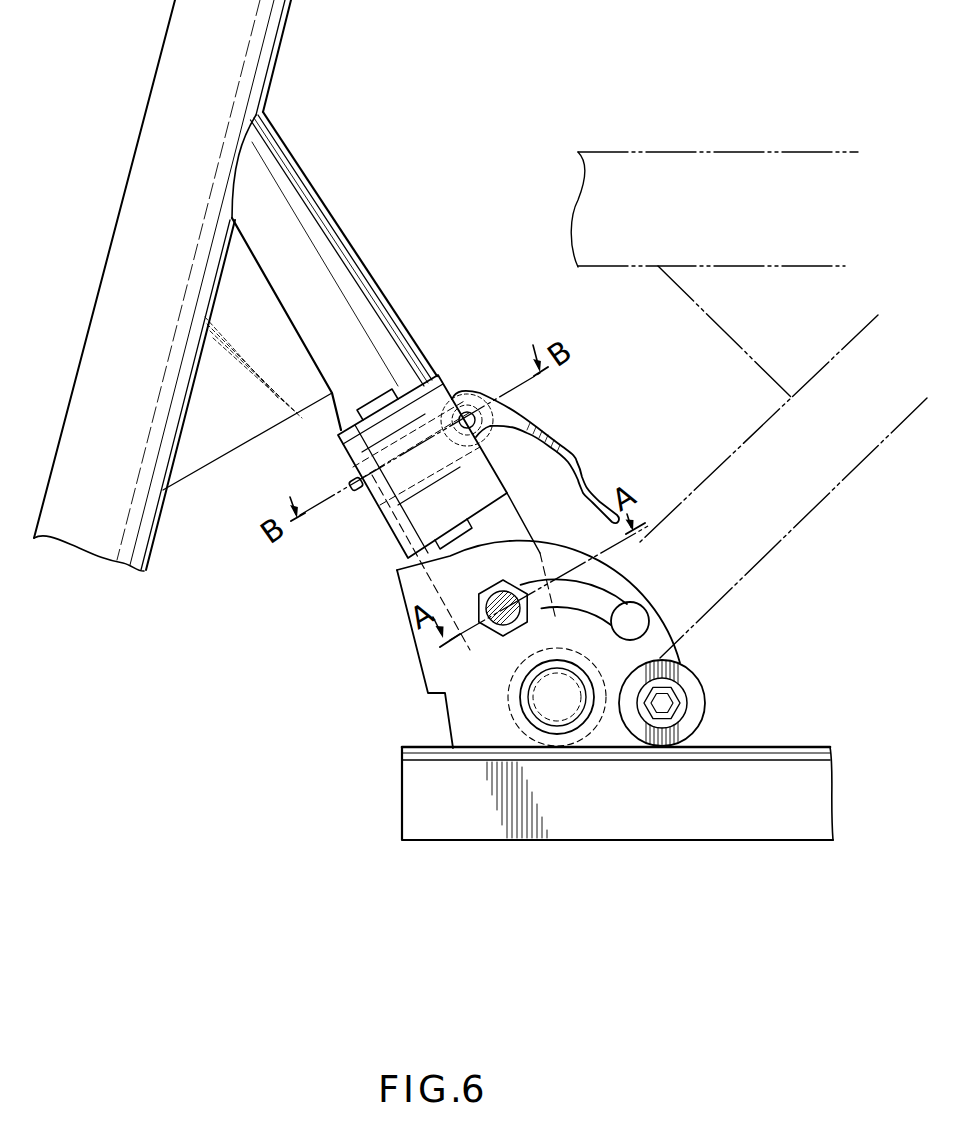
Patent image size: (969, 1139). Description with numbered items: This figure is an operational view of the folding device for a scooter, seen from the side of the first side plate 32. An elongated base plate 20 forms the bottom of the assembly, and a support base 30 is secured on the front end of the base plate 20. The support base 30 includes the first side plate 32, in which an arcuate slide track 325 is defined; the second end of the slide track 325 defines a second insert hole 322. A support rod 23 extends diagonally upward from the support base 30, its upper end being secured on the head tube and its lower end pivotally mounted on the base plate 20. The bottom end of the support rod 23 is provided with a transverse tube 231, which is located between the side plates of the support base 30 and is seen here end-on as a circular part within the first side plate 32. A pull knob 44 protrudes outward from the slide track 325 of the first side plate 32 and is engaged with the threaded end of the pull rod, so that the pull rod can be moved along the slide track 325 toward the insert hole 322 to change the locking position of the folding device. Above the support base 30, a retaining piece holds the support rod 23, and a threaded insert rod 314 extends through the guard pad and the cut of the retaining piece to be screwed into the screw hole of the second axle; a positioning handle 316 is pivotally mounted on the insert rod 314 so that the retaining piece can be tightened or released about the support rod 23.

The base plate 20 is at (755, 822).
The support rod 23 is at (322, 197).
The support base 30 is at (352, 462).
The first side plate 32 is at (425, 683).
The pull knob 44 is at (500, 626).
The transverse tube 231 is at (550, 597).
The threaded insert rod 314 is at (357, 493).
The positioning handle 316 is at (573, 447).
The second insert hole 322 is at (625, 640).
The arcuate slide track 325 is at (570, 592).